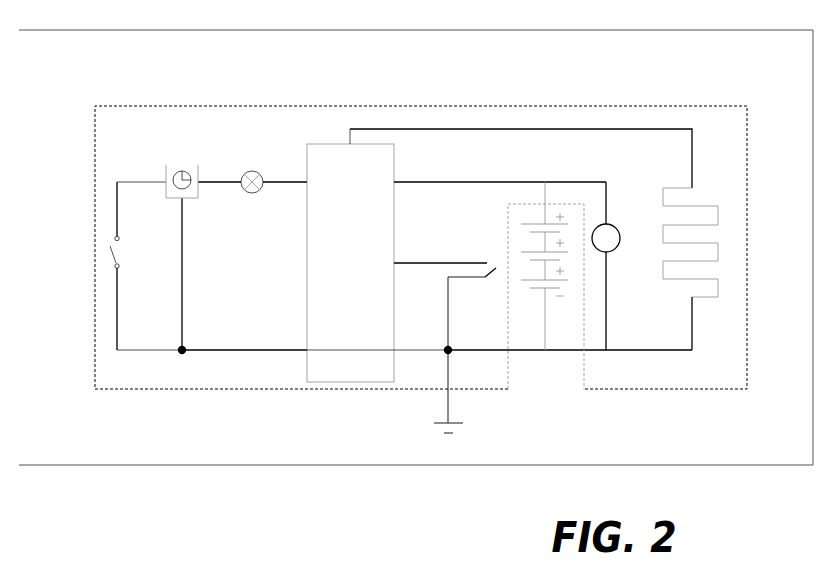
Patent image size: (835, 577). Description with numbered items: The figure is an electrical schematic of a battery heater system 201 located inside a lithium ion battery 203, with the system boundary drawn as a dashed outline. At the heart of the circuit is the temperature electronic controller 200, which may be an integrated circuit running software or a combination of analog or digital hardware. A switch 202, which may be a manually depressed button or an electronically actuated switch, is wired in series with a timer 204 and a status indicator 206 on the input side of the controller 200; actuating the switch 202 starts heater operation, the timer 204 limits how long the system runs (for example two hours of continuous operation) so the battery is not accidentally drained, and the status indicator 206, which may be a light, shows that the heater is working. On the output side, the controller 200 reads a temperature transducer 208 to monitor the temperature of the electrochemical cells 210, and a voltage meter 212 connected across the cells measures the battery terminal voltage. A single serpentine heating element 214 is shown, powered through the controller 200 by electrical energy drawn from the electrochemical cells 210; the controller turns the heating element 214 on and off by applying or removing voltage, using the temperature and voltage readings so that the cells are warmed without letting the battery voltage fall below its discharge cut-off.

The temperature electronic controller 200 is at (336, 273).
The battery heater system 201 is at (543, 103).
The switch 202 is at (104, 252).
The lithium ion battery 203 is at (775, 56).
The timer 204 is at (156, 162).
The status indicator 206 is at (235, 163).
The temperature transducer 208 is at (492, 265).
The electrochemical cells 210 is at (539, 218).
The voltage meter 212 is at (616, 218).
The heating element 214 is at (710, 195).